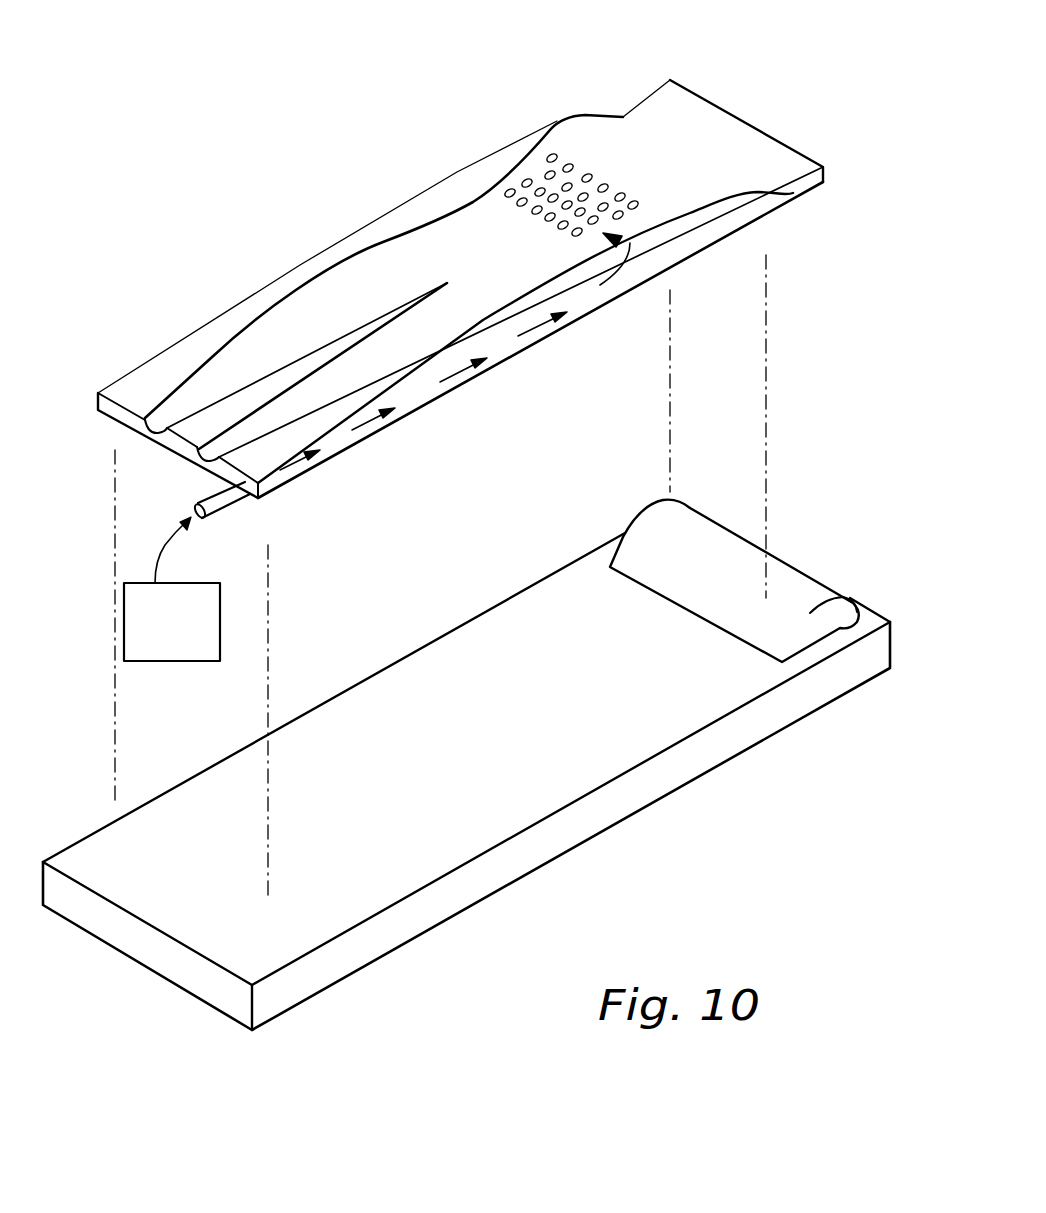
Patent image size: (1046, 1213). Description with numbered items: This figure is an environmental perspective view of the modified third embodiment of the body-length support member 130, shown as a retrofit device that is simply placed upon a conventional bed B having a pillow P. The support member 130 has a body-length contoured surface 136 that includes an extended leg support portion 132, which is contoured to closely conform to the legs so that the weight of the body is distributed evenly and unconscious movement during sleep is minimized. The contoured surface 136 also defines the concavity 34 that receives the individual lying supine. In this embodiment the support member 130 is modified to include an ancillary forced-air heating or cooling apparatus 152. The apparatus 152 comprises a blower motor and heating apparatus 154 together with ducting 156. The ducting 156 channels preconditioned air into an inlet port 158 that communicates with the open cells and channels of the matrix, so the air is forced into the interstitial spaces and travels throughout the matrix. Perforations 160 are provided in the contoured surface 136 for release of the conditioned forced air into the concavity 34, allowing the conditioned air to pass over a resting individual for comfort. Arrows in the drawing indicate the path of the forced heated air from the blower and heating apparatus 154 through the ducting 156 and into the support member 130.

The body-length support member 130 is at (437, 253).
The leg support portion 132 is at (172, 362).
The concavity 34 is at (488, 242).
The contoured surface 136 is at (322, 330).
The perforations 160 is at (590, 177).
The forced-air heating or cooling apparatus 152 is at (170, 549).
The blower motor and heating apparatus 154 is at (178, 661).
The ducting 156 is at (207, 497).
The inlet port 158 is at (240, 500).
The bed B is at (530, 738).
The pillow P is at (708, 588).